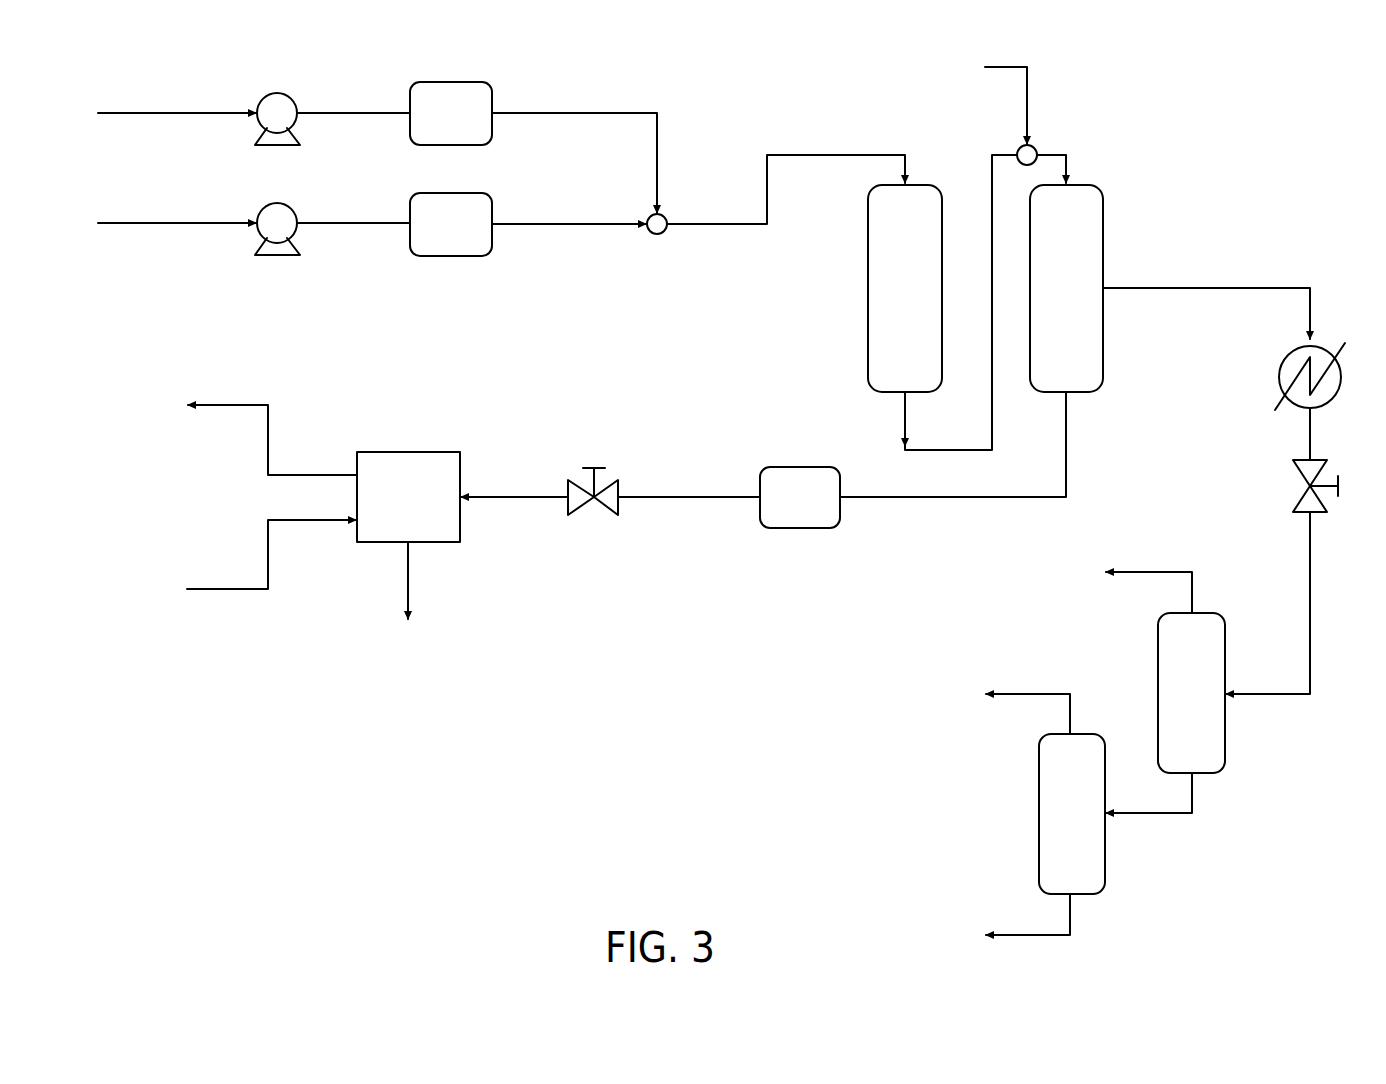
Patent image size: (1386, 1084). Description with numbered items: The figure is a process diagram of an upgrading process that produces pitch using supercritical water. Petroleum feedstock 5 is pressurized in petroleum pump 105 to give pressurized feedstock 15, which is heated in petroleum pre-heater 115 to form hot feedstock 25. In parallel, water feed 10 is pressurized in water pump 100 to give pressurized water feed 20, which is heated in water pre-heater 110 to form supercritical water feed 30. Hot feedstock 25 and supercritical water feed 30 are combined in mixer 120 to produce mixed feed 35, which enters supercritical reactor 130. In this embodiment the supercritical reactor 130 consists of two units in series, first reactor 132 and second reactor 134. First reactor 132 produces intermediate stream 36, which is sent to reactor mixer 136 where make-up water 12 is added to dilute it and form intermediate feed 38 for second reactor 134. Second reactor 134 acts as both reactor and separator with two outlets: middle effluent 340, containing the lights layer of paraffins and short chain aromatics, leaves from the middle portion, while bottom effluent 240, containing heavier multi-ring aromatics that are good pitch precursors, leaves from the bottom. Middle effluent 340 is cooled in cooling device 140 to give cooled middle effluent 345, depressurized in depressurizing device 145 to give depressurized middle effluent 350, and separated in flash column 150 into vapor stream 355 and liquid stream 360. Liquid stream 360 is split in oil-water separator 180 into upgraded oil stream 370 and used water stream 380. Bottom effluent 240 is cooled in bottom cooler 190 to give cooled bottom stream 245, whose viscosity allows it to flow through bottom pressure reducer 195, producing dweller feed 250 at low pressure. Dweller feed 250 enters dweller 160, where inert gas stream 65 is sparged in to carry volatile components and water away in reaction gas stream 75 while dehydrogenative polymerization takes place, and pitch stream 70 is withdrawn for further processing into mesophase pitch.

The petroleum feedstock 5 is at (176, 113).
The water feed 10 is at (176, 223).
The make-up water 12 is at (1003, 67).
The pressurized feedstock 15 is at (370, 113).
The pressurized water feed 20 is at (372, 223).
The hot feedstock 25 is at (598, 113).
The supercritical water feed 30 is at (598, 224).
The mixed feed 35 is at (845, 155).
The intermediate stream 36 is at (905, 415).
The intermediate feed 38 is at (1066, 160).
The inert gas stream 65 is at (233, 589).
The pitch stream 70 is at (408, 573).
The reaction gas stream 75 is at (233, 405).
The water pump 100 is at (268, 206).
The petroleum pump 105 is at (268, 96).
The water pre-heater 110 is at (474, 238).
The petroleum pre-heater 115 is at (474, 127).
The mixer 120 is at (665, 231).
The supercritical reactor 130 is at (1135, 181).
The first reactor 132 is at (868, 325).
The second reactor 134 is at (1103, 214).
The reactor mixer 136 is at (1036, 148).
The cooling device 140 is at (1278, 372).
The depressurizing device 145 is at (1296, 498).
The flash column 150 is at (1158, 645).
The dweller 160 is at (431, 510).
The oil-water separator 180 is at (1039, 806).
The bottom cooler 190 is at (823, 511).
The bottom pressure reducer 195 is at (614, 482).
The bottom effluent 240 is at (975, 497).
The cooled bottom stream 245 is at (670, 497).
The dweller feed 250 is at (510, 497).
The middle effluent 340 is at (1240, 288).
The cooled middle effluent 345 is at (1307, 430).
The depressurized middle effluent 350 is at (1278, 694).
The vapor stream 355 is at (1150, 572).
The liquid stream 360 is at (1157, 813).
The upgraded oil stream 370 is at (1028, 694).
The used water stream 380 is at (1020, 935).